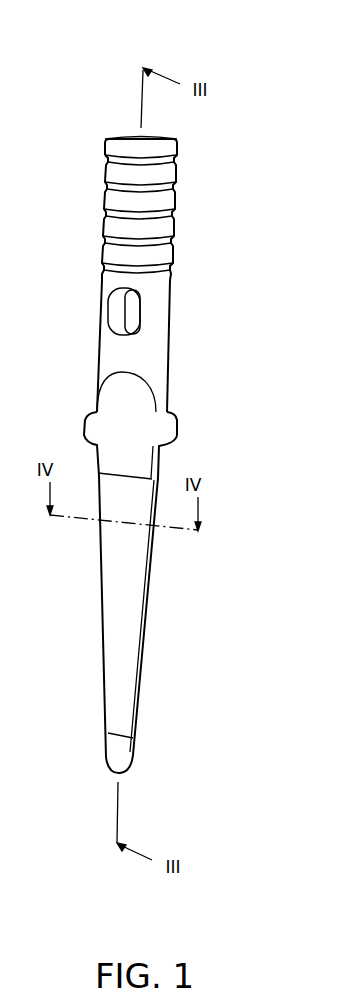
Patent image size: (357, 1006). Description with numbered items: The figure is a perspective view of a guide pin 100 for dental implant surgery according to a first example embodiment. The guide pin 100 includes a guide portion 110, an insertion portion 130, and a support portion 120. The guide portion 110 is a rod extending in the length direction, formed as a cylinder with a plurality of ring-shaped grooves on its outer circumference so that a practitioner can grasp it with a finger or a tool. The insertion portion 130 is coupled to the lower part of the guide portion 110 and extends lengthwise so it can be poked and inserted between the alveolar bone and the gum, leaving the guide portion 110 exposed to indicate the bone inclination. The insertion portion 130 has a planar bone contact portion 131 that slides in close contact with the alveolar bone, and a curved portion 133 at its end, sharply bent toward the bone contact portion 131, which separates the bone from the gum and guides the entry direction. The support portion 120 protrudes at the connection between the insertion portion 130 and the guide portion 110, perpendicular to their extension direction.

The guide pin 100 is at (233, 186).
The guide portion 110 is at (106, 149).
The support portion 120 is at (172, 420).
The insertion portion 130 is at (150, 593).
The bone contact portion 131 is at (120, 613).
The curved portion 133 is at (115, 760).